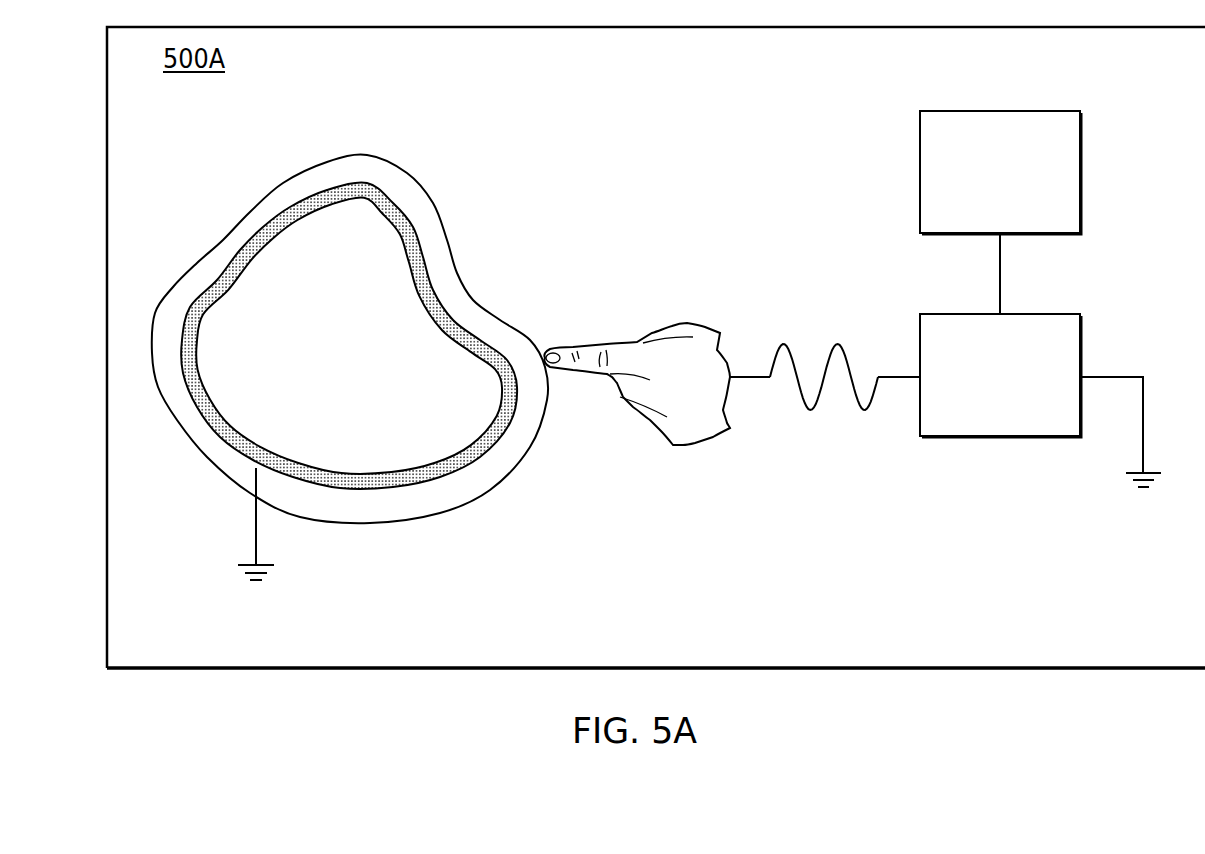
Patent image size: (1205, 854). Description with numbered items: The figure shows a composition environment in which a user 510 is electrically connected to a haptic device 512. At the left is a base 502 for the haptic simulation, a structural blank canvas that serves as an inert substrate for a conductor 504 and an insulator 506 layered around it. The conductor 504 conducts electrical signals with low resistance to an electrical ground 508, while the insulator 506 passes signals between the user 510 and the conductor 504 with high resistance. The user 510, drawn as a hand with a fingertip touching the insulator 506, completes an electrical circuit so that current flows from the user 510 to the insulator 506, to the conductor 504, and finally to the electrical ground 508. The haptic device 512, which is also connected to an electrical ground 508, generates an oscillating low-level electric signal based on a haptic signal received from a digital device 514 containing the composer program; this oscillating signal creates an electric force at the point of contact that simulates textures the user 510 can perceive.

The base 502 is at (362, 388).
The conductor 504 is at (405, 210).
The insulator 506 is at (475, 298).
The electrical ground 508 is at (257, 542).
The user 510 is at (690, 324).
The haptic device 512 is at (1040, 314).
The digital device 514 is at (1040, 110).